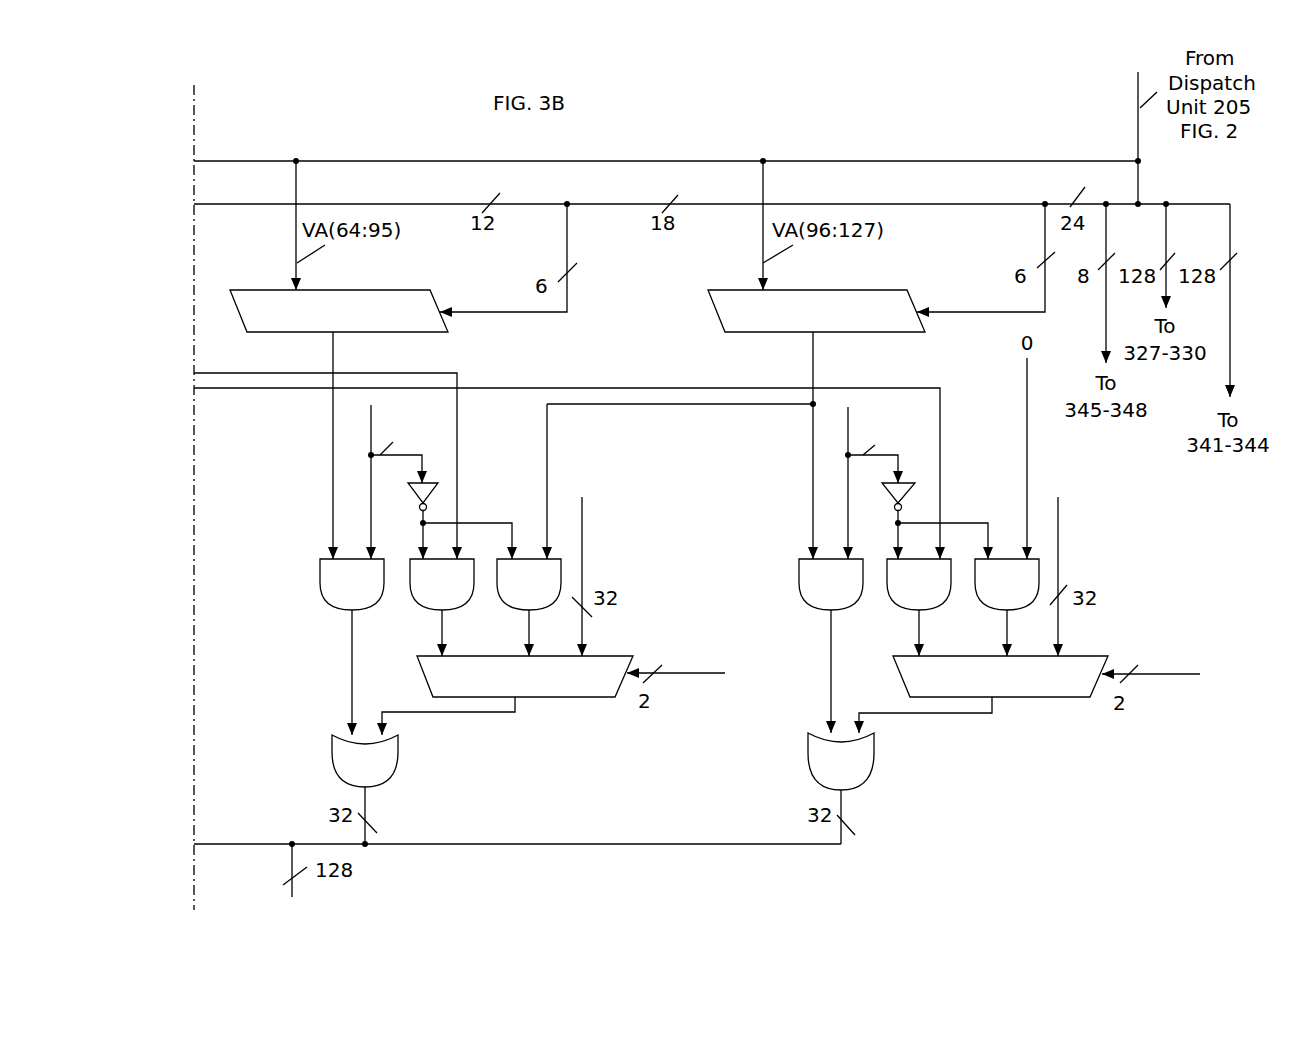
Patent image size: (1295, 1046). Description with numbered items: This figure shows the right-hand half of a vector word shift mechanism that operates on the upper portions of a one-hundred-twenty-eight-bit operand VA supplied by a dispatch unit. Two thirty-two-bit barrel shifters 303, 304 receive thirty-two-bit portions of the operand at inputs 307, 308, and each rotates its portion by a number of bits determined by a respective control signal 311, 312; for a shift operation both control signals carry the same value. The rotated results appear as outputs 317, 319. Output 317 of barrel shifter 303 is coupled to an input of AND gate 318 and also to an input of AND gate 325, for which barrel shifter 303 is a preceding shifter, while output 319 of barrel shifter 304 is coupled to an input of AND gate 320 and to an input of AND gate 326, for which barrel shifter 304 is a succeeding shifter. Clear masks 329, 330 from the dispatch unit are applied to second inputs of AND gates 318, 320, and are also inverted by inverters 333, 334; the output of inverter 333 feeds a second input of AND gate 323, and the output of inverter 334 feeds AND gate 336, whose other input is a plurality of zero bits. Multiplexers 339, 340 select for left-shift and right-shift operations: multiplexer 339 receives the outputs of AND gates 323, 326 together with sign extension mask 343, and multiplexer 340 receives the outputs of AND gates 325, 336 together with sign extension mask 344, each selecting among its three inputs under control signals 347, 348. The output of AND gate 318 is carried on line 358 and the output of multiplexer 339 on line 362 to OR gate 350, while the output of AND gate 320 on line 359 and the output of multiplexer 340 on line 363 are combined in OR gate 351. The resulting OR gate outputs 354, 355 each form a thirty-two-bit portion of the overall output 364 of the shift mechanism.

The barrel shifter 303 is at (398, 290).
The barrel shifter 304 is at (892, 278).
The input 307 is at (296, 200).
The input 308 is at (763, 200).
The control signal 311 is at (568, 253).
The control signal 312 is at (1045, 243).
The output 317 is at (335, 445).
The AND gate 318 is at (335, 592).
The output 319 is at (812, 445).
The AND gate 320 is at (814, 592).
The AND gate 323 is at (425, 592).
The AND gate 325 is at (902, 592).
The AND gate 326 is at (512, 592).
The clear mask 329 is at (373, 415).
The clear mask 330 is at (852, 415).
The inverter 333 is at (412, 492).
The inverter 334 is at (892, 492).
The AND gate 336 is at (990, 592).
The multiplexer 339 is at (507, 687).
The multiplexer 340 is at (982, 687).
The sign extension mask 343 is at (582, 543).
The sign extension mask 344 is at (1060, 542).
The control signal 347 is at (690, 662).
The control signal 348 is at (1165, 662).
The OR gate 350 is at (348, 772).
The OR gate 351 is at (824, 777).
The OR gate output line 354 is at (370, 808).
The OR gate output line 355 is at (845, 808).
The AND gate output line 358 is at (352, 658).
The AND gate output line 359 is at (832, 660).
The multiplexer output line 362 is at (467, 713).
The multiplexer output line 363 is at (943, 715).
The output 364 is at (517, 871).